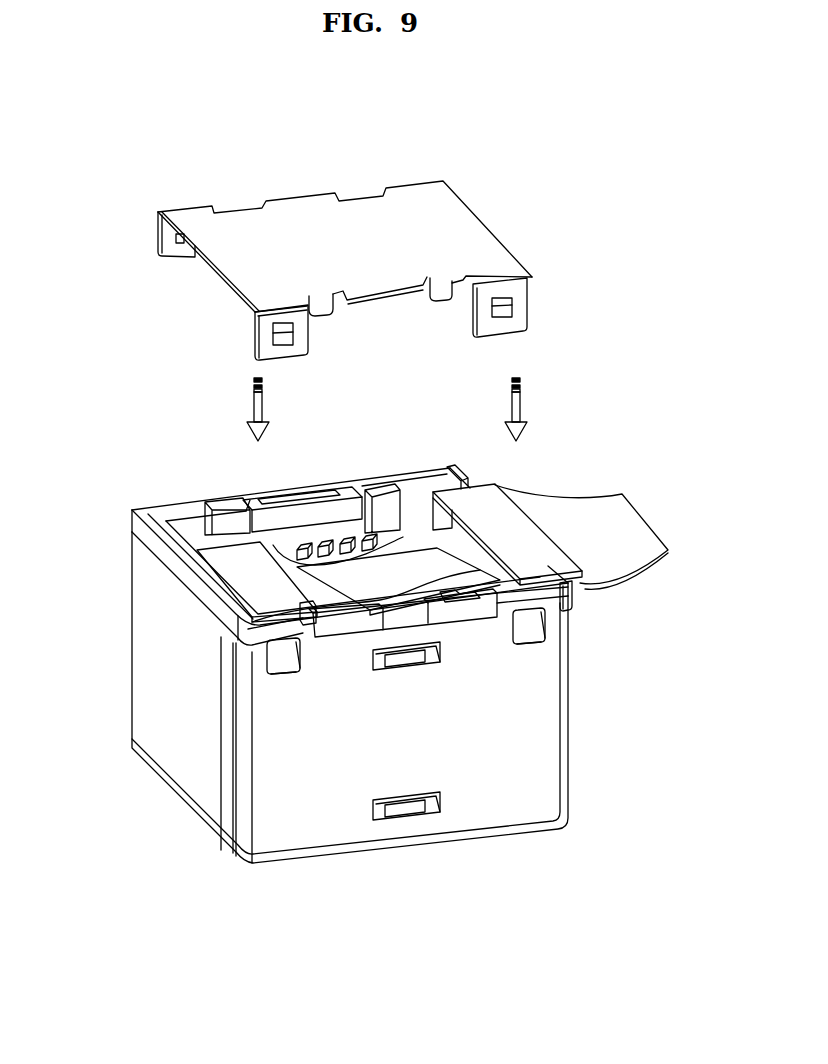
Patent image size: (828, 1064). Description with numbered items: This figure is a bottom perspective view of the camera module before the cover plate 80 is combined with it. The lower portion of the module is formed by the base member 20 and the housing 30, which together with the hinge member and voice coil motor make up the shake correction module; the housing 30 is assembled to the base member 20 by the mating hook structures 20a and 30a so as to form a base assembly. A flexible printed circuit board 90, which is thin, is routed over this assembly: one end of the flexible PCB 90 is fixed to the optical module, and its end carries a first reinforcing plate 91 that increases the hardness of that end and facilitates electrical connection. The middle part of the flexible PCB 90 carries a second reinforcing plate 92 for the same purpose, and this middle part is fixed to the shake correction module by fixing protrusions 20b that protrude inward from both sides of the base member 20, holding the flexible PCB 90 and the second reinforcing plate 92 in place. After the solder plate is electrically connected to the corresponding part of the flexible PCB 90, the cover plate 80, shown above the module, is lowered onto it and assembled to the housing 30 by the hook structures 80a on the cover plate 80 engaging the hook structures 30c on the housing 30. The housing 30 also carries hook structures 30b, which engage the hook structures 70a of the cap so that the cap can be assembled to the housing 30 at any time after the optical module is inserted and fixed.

The base member 20 is at (178, 540).
The hook structure 20a is at (397, 668).
The fixing protrusion 20b is at (576, 583).
The housing 30 is at (493, 803).
The hook structure 30a is at (433, 663).
The hook structure 30b is at (433, 813).
The hook structure 30c is at (545, 632).
The hook structure 70a is at (397, 821).
The cover plate 80 is at (473, 234).
The hook structure 80a is at (512, 308).
The flexible printed circuit board 90 is at (385, 557).
The first reinforcing plate 91 is at (238, 560).
The second reinforcing plate 92 is at (492, 505).